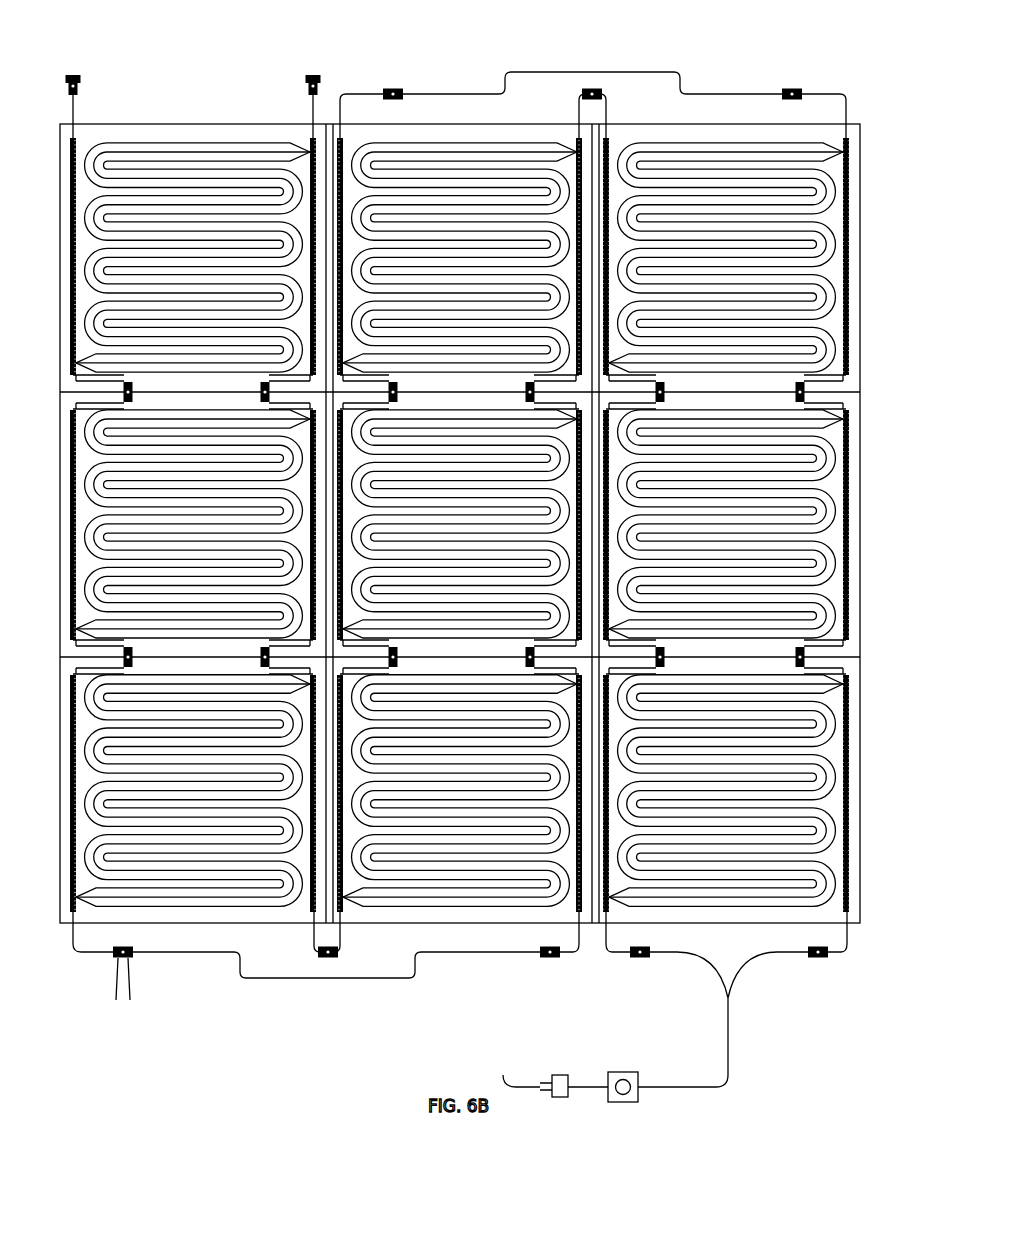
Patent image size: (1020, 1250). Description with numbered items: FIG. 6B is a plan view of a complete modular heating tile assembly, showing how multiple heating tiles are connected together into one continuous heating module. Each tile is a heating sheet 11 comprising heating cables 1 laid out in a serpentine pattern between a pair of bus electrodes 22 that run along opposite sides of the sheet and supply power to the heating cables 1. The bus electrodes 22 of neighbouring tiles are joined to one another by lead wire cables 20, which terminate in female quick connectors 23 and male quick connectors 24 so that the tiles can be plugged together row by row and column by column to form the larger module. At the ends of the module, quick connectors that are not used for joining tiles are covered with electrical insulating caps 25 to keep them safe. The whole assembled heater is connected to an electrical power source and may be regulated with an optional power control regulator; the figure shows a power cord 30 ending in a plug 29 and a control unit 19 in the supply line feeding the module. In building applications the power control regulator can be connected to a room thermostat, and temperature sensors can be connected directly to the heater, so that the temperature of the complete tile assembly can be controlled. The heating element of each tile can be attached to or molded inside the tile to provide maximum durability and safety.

The heating cables 1 is at (832, 460).
The heating sheet 11 is at (860, 628).
The bus electrodes 22 is at (850, 548).
The electrical insulating caps 25 is at (73, 75).
The male quick connector 24 is at (116, 1000).
The female quick connector 23 is at (130, 1000).
The lead wire cables 20 is at (326, 978).
The power cord 30 is at (503, 1075).
The plug 29 is at (586, 1075).
The controller 19 is at (627, 1072).